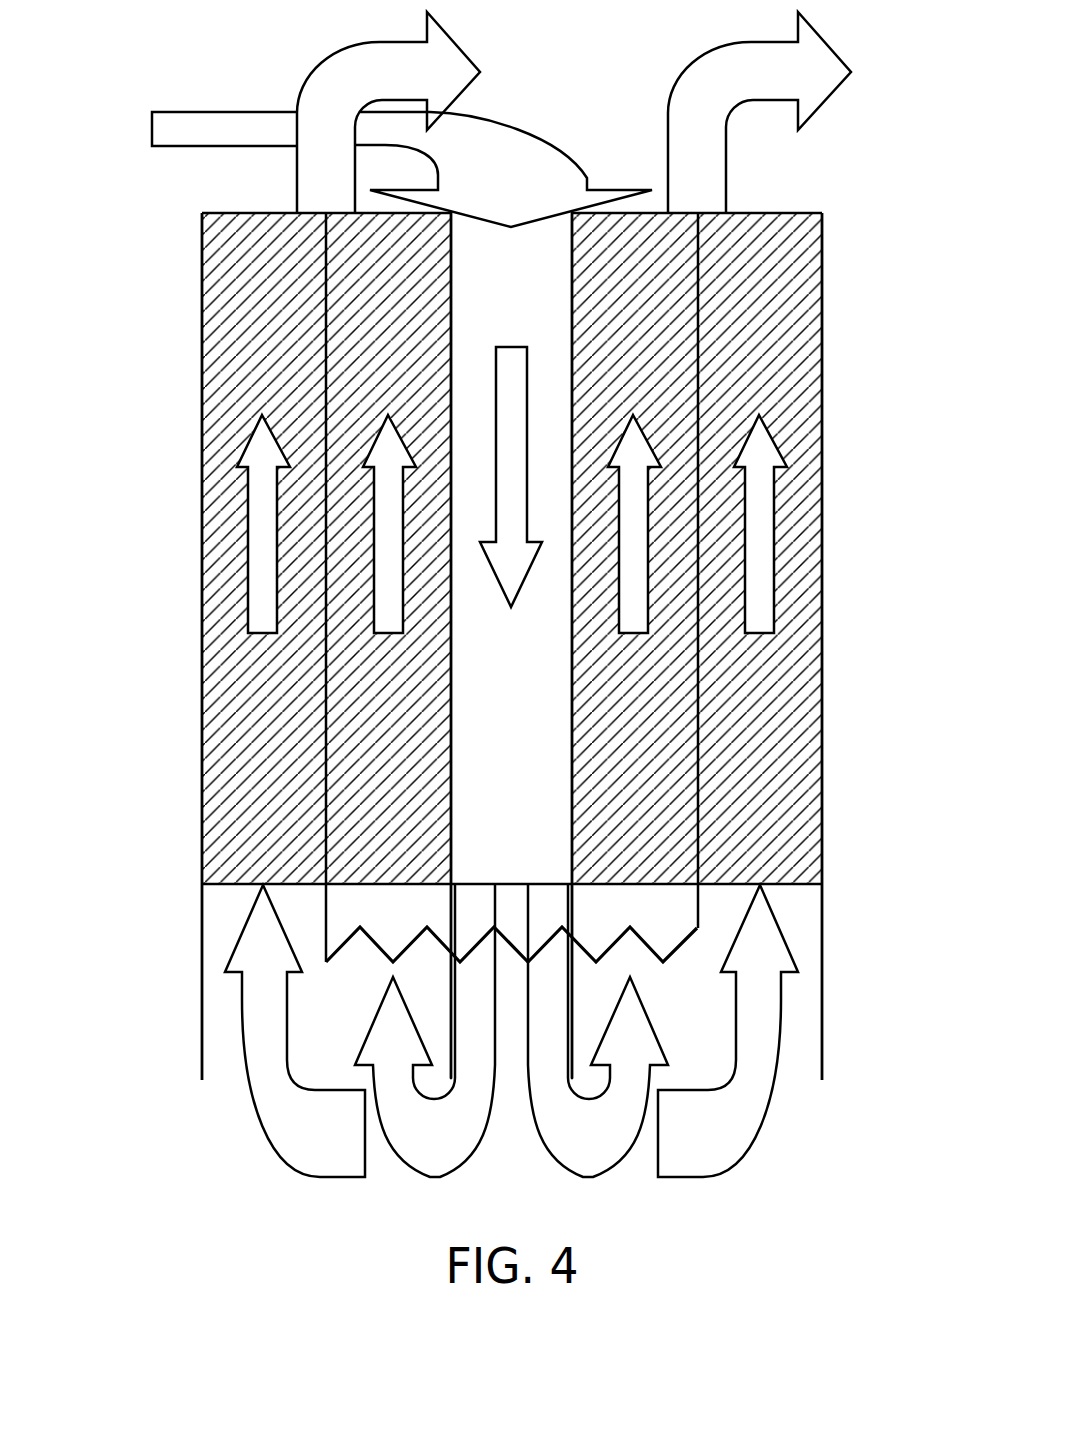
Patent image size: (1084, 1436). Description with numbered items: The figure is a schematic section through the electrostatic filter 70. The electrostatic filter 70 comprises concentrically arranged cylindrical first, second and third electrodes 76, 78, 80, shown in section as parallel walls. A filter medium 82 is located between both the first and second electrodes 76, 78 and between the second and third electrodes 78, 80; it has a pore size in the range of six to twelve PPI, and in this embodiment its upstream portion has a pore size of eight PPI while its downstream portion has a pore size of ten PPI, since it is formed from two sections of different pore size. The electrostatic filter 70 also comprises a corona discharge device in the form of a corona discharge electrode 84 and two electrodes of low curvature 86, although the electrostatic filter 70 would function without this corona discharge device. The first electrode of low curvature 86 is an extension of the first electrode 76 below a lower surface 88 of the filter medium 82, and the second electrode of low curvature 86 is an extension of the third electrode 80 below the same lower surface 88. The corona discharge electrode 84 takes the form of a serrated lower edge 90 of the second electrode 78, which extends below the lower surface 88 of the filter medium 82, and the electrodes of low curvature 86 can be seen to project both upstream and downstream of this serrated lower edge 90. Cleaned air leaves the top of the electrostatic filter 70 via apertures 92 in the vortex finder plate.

The electrostatic filter 70 is at (149, 258).
The first electrode 76 is at (202, 598).
The second electrode 78 is at (326, 665).
The third electrode 80 is at (450, 715).
The filter medium 82 is at (218, 809).
The corona discharge electrode 84 is at (675, 950).
The electrodes of low curvature 86 is at (204, 997).
The lower surface 88 is at (296, 884).
The serrated lower edge 90 is at (542, 952).
The apertures 92 is at (784, 213).